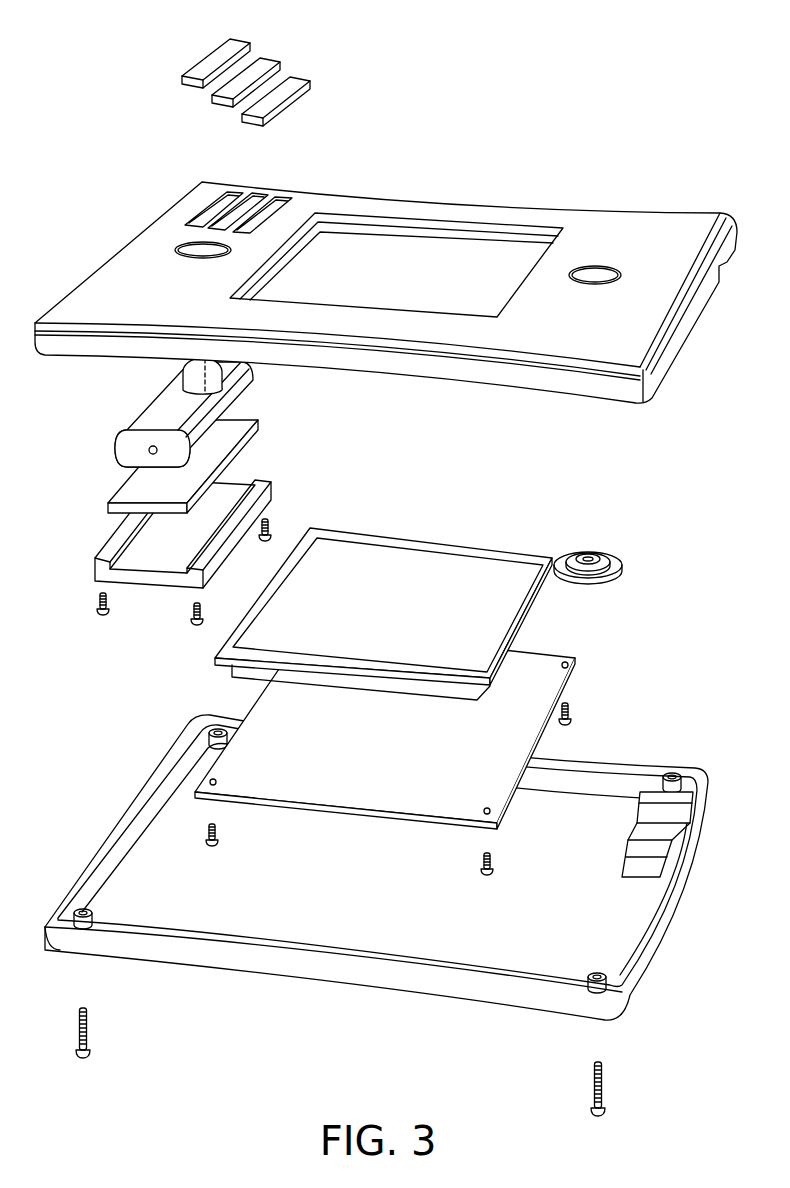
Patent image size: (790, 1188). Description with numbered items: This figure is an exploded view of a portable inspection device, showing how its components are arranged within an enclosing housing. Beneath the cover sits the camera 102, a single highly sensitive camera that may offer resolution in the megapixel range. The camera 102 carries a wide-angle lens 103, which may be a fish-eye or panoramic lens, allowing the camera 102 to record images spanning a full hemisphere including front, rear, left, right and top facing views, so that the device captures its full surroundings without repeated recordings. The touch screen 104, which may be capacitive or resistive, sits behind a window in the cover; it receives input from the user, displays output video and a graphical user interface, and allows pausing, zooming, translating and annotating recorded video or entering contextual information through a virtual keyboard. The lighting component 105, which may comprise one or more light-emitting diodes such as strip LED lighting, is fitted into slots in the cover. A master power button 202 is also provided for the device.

The camera 102 is at (118, 447).
The wide-angle lens 103 is at (184, 371).
The touch screen 104 is at (406, 558).
The lighting component 105 is at (212, 58).
The master power button 202 is at (603, 553).